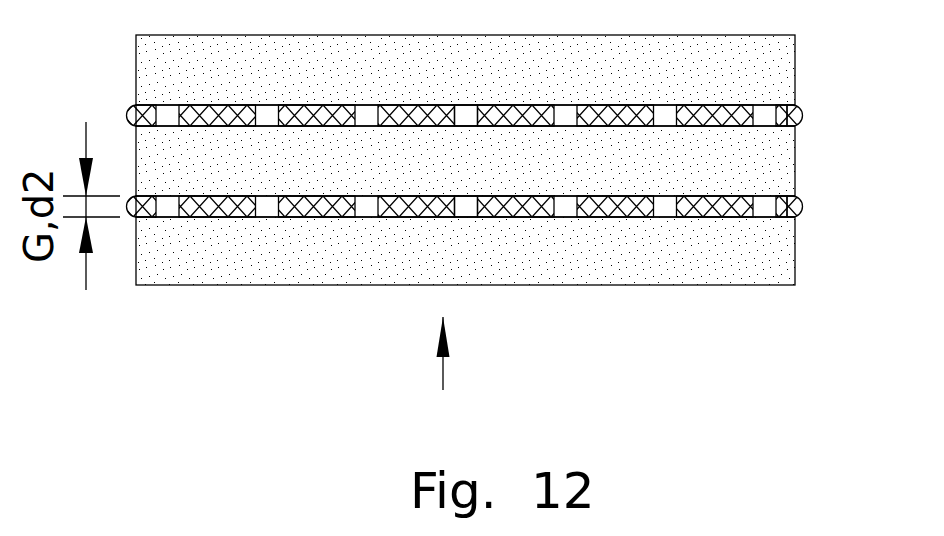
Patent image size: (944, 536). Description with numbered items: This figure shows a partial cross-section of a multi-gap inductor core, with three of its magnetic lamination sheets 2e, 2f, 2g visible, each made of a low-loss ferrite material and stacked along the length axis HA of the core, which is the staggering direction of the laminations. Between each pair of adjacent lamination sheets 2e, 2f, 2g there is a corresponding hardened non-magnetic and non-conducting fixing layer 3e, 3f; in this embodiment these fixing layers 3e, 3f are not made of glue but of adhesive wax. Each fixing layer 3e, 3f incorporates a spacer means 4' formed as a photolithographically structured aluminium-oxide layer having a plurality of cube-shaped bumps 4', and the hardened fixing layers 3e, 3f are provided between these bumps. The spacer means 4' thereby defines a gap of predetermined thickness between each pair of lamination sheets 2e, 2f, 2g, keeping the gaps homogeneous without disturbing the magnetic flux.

The magnetic lamination sheet 2e is at (775, 81).
The magnetic lamination sheet 2f is at (775, 172).
The magnetic lamination sheet 2g is at (773, 268).
The fixing layer 3e is at (786, 115).
The fixing layer 3f is at (785, 206).
The spacer means 4' is at (498, 130).
The length axis HA is at (477, 353).